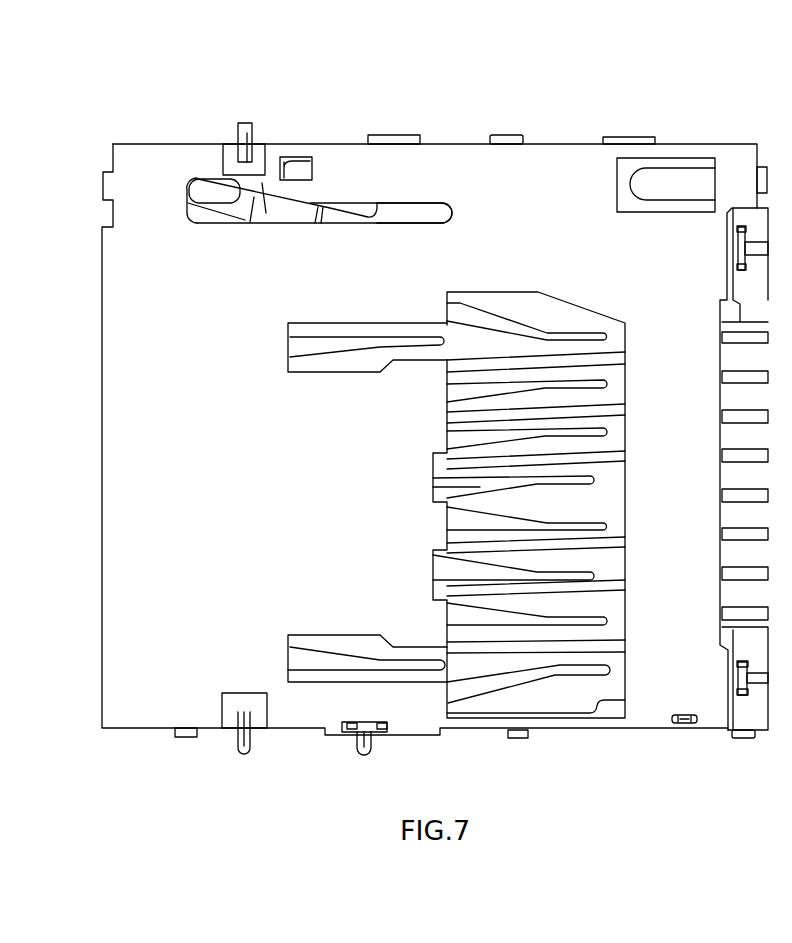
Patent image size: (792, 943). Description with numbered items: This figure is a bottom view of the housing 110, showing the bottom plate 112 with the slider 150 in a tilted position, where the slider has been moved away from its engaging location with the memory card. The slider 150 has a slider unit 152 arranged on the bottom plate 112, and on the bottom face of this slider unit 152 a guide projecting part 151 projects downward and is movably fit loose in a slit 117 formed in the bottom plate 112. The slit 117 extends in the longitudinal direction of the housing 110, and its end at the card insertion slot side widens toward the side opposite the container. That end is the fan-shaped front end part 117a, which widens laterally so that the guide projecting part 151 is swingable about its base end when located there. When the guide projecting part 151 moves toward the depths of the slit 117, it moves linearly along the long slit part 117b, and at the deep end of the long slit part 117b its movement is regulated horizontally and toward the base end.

The housing 110 is at (663, 128).
The bottom plate 112 is at (112, 418).
The slit 117 is at (418, 212).
The front end part 117a is at (195, 224).
The long slit part 117b is at (408, 203).
The slider 150 is at (252, 106).
The guide projecting part 151 is at (203, 188).
The slider unit 152 is at (265, 210).